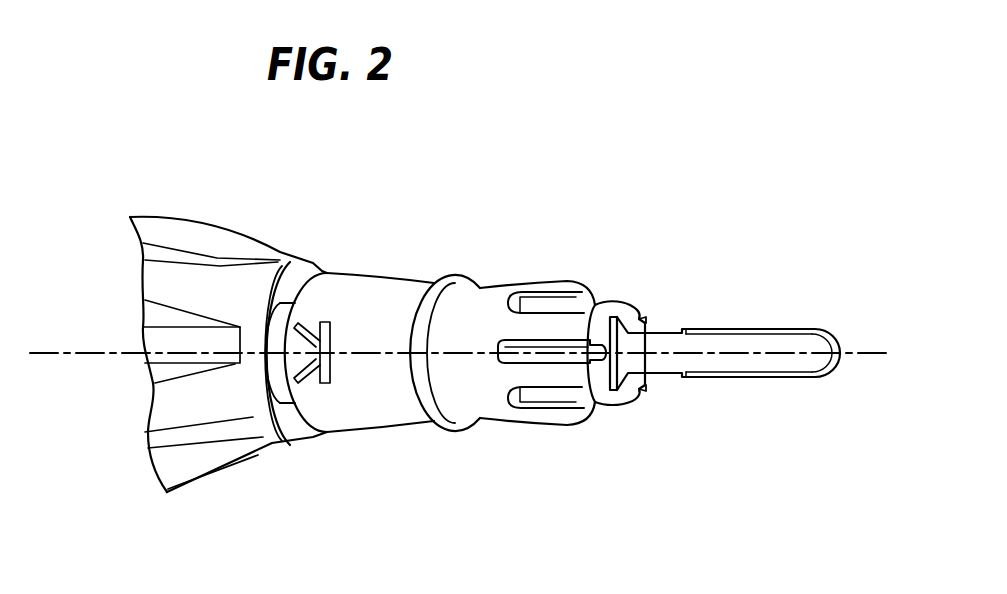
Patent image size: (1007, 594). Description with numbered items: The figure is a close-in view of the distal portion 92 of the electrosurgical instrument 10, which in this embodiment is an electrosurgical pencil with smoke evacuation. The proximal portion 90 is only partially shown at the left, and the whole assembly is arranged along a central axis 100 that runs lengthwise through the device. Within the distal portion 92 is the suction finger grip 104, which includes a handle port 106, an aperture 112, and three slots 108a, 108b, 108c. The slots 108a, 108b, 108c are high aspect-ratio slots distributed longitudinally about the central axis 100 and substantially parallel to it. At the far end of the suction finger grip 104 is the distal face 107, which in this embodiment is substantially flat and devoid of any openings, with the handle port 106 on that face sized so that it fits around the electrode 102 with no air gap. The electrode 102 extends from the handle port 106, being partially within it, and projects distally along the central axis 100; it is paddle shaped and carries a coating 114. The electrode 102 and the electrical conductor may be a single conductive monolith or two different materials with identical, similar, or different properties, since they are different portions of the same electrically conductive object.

The electrosurgical instrument 10 is at (110, 150).
The proximal portion 90 is at (205, 209).
The distal portion 92 is at (870, 155).
The central axis 100 is at (83, 360).
The electrode 102 is at (832, 333).
The suction finger grip 104 is at (628, 503).
The handle port 106 is at (632, 310).
The distal face 107 is at (630, 397).
The slot 108a is at (548, 308).
The slot 108b is at (562, 342).
The slot 108c is at (568, 382).
The aperture 112 is at (607, 442).
The coating 114 is at (817, 382).